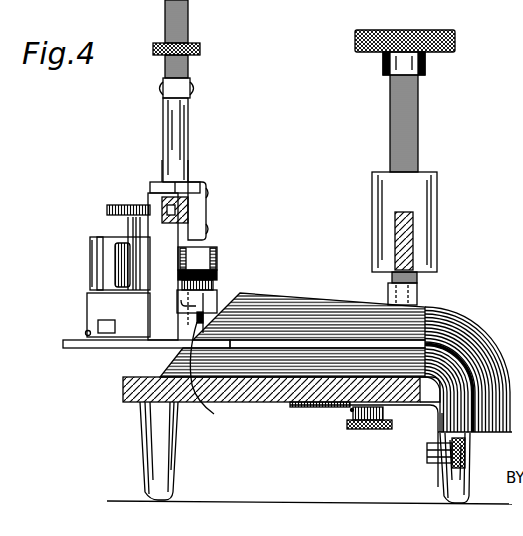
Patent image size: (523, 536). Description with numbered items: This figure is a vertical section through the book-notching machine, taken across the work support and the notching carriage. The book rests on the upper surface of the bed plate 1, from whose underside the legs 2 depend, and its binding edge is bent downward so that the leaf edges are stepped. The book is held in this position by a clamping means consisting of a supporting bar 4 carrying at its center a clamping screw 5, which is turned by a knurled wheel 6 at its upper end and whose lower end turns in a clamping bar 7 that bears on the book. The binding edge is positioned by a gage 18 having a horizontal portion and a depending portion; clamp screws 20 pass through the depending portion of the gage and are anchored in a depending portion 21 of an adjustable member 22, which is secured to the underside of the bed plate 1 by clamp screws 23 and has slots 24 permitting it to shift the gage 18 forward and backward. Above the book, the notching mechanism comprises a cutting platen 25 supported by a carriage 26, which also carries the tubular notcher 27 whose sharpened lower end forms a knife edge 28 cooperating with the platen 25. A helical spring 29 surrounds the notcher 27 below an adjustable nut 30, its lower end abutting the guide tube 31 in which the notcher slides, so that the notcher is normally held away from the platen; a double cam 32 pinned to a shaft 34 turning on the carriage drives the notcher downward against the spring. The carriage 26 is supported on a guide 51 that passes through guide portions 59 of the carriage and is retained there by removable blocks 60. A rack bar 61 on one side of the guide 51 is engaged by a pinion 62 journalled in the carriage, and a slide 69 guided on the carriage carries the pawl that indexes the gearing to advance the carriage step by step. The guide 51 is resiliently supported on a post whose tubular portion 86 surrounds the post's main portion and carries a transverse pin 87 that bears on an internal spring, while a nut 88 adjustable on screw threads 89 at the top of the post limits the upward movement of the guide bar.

The bed plate 1 is at (123, 389).
The legs 2 is at (145, 432).
The supporting bar 4 is at (410, 232).
The clamping screw 5 is at (413, 116).
The knurled wheel 6 is at (445, 30).
The clamping bar 7 is at (418, 293).
The gage 18 is at (482, 437).
The clamp screws 20 is at (468, 455).
The depending portion 21 is at (437, 424).
The adjustable member 22 is at (305, 407).
The clamp screws 23 is at (348, 424).
The slots 24 is at (350, 410).
The cutting platen 25 is at (167, 347).
The carriage 26 is at (155, 340).
The notcher 27 is at (193, 340).
The knife edge 28 is at (292, 374).
The helical spring 29 is at (215, 284).
The adjustable nut 30 is at (218, 272).
The guide tube 31 is at (215, 296).
The double cam 32 is at (218, 250).
The shaft 34 is at (92, 259).
The guide 51 is at (180, 187).
The guide portions 59 is at (184, 183).
The removable blocks 60 is at (206, 207).
The rack bar 61 is at (174, 224).
The pinion 62 is at (106, 210).
The slide 69 is at (93, 282).
The tubular portion 86 is at (190, 118).
The transverse pin 87 is at (196, 89).
The nut 88 is at (200, 45).
The screw threads 89 is at (165, 70).